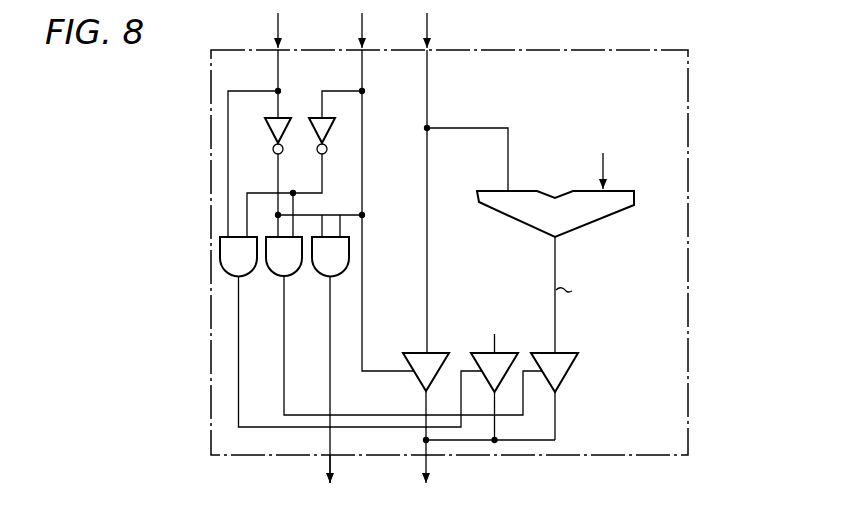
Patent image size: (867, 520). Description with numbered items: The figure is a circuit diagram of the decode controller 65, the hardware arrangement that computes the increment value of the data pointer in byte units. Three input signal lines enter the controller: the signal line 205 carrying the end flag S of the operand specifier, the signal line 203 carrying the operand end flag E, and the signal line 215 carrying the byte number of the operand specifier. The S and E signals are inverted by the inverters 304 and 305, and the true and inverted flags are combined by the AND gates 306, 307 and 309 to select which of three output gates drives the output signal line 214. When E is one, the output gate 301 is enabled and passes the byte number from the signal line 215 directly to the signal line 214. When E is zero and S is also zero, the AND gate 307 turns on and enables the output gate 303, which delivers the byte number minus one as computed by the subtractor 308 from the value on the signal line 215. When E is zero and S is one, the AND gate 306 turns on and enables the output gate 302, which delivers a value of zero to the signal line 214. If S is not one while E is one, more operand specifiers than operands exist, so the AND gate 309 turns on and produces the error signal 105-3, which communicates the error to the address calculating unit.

The decode controller 65 is at (688, 82).
The signal line 205 is at (278, 22).
The signal line 203 is at (362, 22).
The signal line 215 is at (427, 22).
The inverter 304 is at (268, 130).
The inverter 305 is at (336, 133).
The AND gate 306 is at (224, 270).
The AND gate 307 is at (268, 269).
The AND gate 309 is at (313, 269).
The output gate 301 is at (416, 384).
The output gate 302 is at (479, 352).
The output gate 303 is at (562, 385).
The subtractor 308 is at (594, 222).
The error signal 105-3 is at (330, 460).
The signal line 214 is at (426, 460).